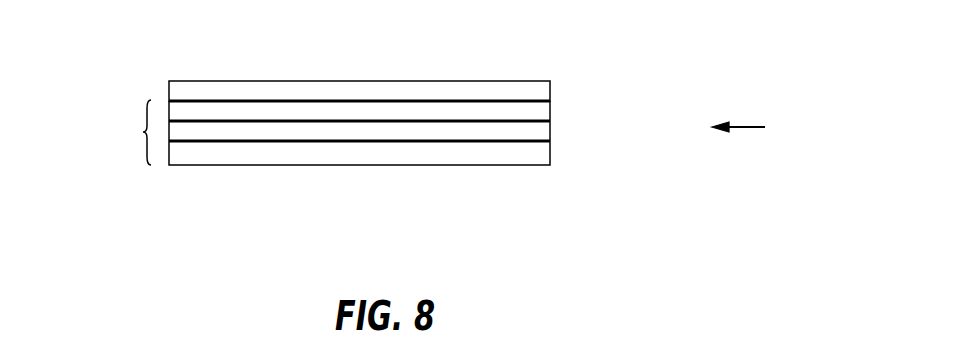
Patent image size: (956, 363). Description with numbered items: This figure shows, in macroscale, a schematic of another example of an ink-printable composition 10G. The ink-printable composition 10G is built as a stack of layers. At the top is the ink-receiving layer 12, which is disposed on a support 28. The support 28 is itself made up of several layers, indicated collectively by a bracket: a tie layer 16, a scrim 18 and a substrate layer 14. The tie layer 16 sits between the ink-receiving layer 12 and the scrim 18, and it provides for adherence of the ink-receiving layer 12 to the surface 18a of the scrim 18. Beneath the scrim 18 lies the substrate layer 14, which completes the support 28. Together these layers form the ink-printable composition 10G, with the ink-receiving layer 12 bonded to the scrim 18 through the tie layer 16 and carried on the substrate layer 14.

The ink-printable composition 10G is at (779, 129).
The ink-receiving layer 12 is at (500, 80).
The substrate layer 14 is at (282, 165).
The tie layer 16 is at (551, 114).
The scrim 18 is at (551, 129).
The surface of scrim 18a is at (460, 121).
The support 28 is at (130, 132).